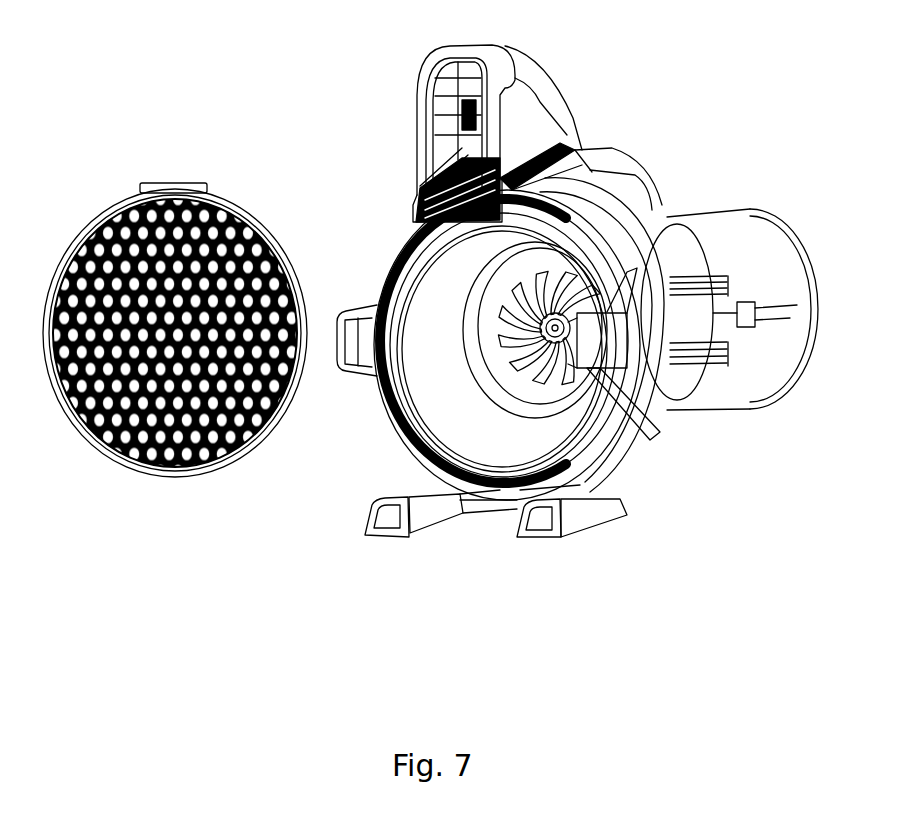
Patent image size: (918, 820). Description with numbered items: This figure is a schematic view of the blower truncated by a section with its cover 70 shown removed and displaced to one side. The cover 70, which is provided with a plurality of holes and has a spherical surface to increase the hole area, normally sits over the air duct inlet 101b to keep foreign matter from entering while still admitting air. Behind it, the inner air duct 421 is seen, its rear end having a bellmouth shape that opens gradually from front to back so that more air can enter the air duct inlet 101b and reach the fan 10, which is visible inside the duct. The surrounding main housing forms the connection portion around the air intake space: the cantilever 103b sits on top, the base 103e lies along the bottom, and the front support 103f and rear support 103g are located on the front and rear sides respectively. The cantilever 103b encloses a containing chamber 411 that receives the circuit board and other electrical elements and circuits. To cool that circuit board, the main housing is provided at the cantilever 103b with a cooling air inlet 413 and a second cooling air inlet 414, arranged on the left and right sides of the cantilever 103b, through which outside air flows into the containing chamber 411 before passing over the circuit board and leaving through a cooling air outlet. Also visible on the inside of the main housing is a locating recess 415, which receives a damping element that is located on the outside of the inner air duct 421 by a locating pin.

The cover 70 is at (97, 210).
The fan 10 is at (552, 387).
The air duct inlet 101b is at (428, 362).
The cantilever 103b is at (520, 95).
The base 103e is at (583, 527).
The front support 103f is at (662, 403).
The rear support 103g is at (360, 307).
The containing chamber 411 is at (508, 130).
The cooling air inlet 413 is at (562, 148).
The cooling air inlet 414 is at (410, 183).
The locating recess 415 is at (422, 187).
The inner air duct 421 is at (727, 240).